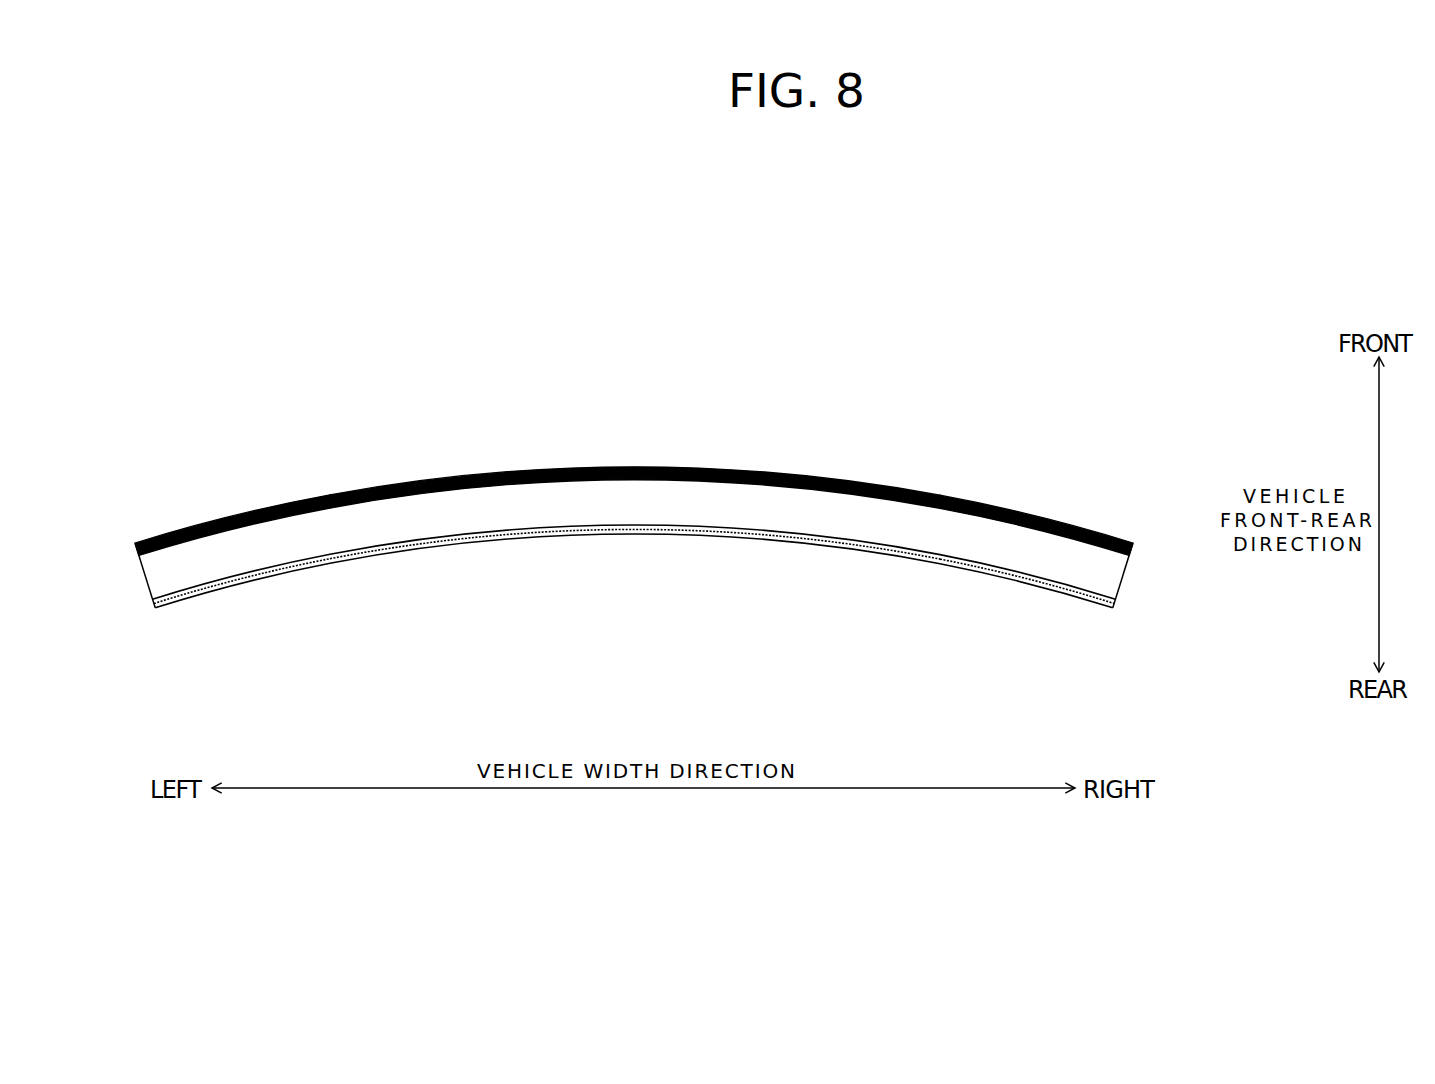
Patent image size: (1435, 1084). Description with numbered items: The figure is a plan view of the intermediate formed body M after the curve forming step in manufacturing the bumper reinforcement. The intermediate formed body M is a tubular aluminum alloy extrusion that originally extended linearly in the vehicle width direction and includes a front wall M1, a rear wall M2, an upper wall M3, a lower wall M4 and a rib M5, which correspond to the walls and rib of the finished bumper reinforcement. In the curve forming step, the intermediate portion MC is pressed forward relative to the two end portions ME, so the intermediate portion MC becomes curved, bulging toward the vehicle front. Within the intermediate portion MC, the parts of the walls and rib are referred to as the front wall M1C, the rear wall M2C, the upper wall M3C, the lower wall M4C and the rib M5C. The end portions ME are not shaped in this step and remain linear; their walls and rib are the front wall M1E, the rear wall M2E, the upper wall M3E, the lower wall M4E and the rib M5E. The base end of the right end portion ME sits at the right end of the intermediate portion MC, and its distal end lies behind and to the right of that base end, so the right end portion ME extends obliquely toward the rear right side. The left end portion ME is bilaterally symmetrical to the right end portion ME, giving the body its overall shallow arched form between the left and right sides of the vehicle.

The intermediate formed body M is at (703, 312).
The intermediate portion MC is at (608, 382).
The end portion ME is at (178, 502).
The front wall M1 is at (627, 471).
The front wall M1C is at (710, 468).
The front wall M1E is at (163, 537).
The rear wall M2 is at (634, 608).
The rear wall M2C is at (782, 538).
The rear wall M2E is at (185, 602).
The upper wall M3 is at (634, 504).
The lower wall M4 is at (634, 504).
The rib M5 is at (634, 504).
The upper wall M3C is at (679, 466).
The lower wall M4C is at (679, 466).
The rib M5C is at (845, 510).
The upper wall M3E is at (634, 570).
The lower wall M4E is at (634, 570).
The rib M5E is at (195, 560).